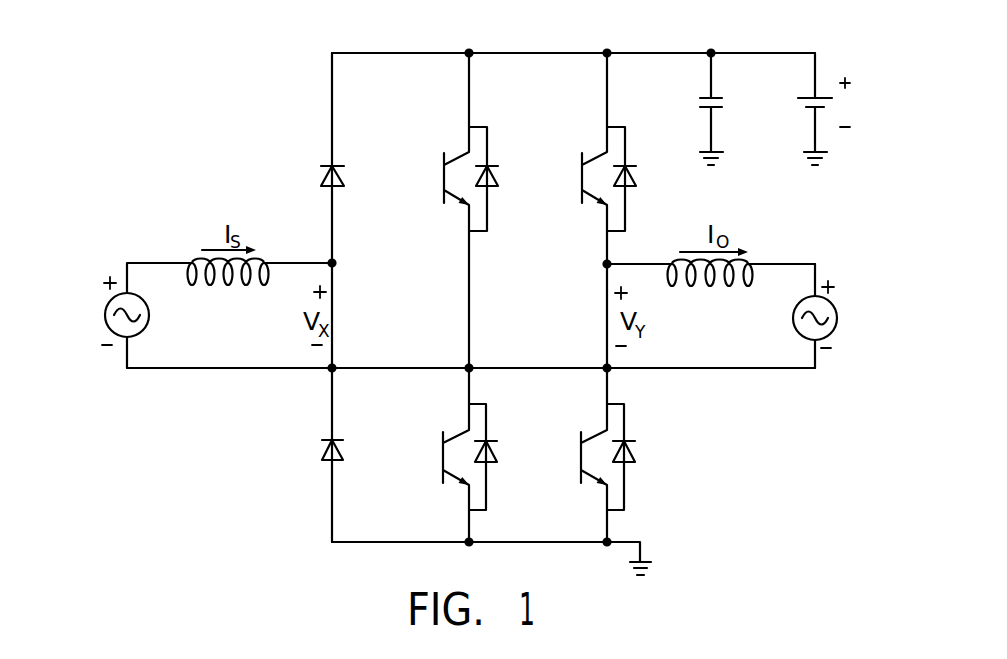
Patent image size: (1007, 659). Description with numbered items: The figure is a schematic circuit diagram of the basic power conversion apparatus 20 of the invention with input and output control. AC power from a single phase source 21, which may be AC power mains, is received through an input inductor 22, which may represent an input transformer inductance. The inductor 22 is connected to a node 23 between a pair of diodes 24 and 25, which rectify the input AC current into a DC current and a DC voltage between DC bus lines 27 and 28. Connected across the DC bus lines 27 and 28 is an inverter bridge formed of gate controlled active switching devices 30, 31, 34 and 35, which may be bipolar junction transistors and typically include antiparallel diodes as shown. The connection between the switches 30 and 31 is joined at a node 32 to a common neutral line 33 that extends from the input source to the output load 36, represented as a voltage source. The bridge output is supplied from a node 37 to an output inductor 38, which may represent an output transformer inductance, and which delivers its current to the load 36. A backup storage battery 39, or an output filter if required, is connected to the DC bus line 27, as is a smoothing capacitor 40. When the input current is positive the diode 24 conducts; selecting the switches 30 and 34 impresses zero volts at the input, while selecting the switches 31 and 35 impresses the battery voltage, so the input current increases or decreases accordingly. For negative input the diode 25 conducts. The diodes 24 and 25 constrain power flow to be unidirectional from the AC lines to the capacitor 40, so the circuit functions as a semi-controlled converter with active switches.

The power conversion apparatus 20 is at (326, 82).
The single phase source 21 is at (108, 306).
The input inductor 22 is at (228, 282).
The node 23 is at (334, 262).
The diode 24 is at (320, 178).
The diode 25 is at (320, 458).
The DC bus line 27 is at (412, 52).
The DC bus line 28 is at (350, 545).
The gate controlled active switching device 30 is at (444, 158).
The gate controlled active switching device 31 is at (440, 481).
The node 32 is at (470, 366).
The common neutral line 33 is at (388, 366).
The gate controlled active switching device 34 is at (582, 158).
The gate controlled active switching device 35 is at (578, 481).
The output load 36 is at (838, 305).
The node 37 is at (605, 266).
The output inductor 38 is at (713, 283).
The backup storage battery 39 is at (827, 99).
The smoothing capacitor 40 is at (706, 97).